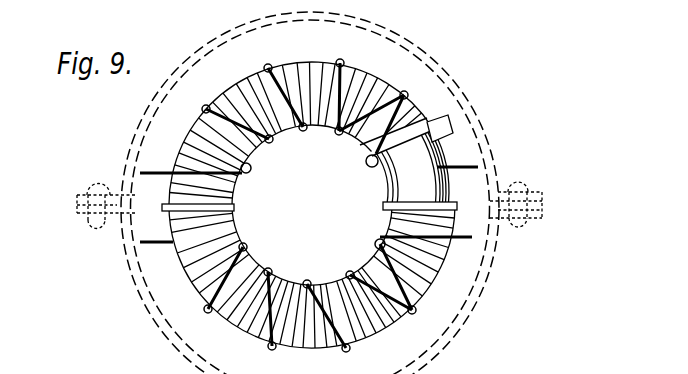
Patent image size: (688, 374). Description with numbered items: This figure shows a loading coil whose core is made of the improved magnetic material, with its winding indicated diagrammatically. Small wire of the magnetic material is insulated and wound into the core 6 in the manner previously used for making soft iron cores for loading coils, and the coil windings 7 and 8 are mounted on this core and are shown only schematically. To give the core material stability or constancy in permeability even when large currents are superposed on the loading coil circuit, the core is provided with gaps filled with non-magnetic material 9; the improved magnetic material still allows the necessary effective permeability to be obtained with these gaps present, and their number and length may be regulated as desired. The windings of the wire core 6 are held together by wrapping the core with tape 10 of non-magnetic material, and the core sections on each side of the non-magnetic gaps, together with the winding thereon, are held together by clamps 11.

The core 6 is at (432, 184).
The coil winding 7 is at (342, 63).
The coil winding 8 is at (416, 312).
The non-magnetic material 9 is at (457, 206).
The tape 10 is at (440, 119).
The clamp 11 is at (494, 152).